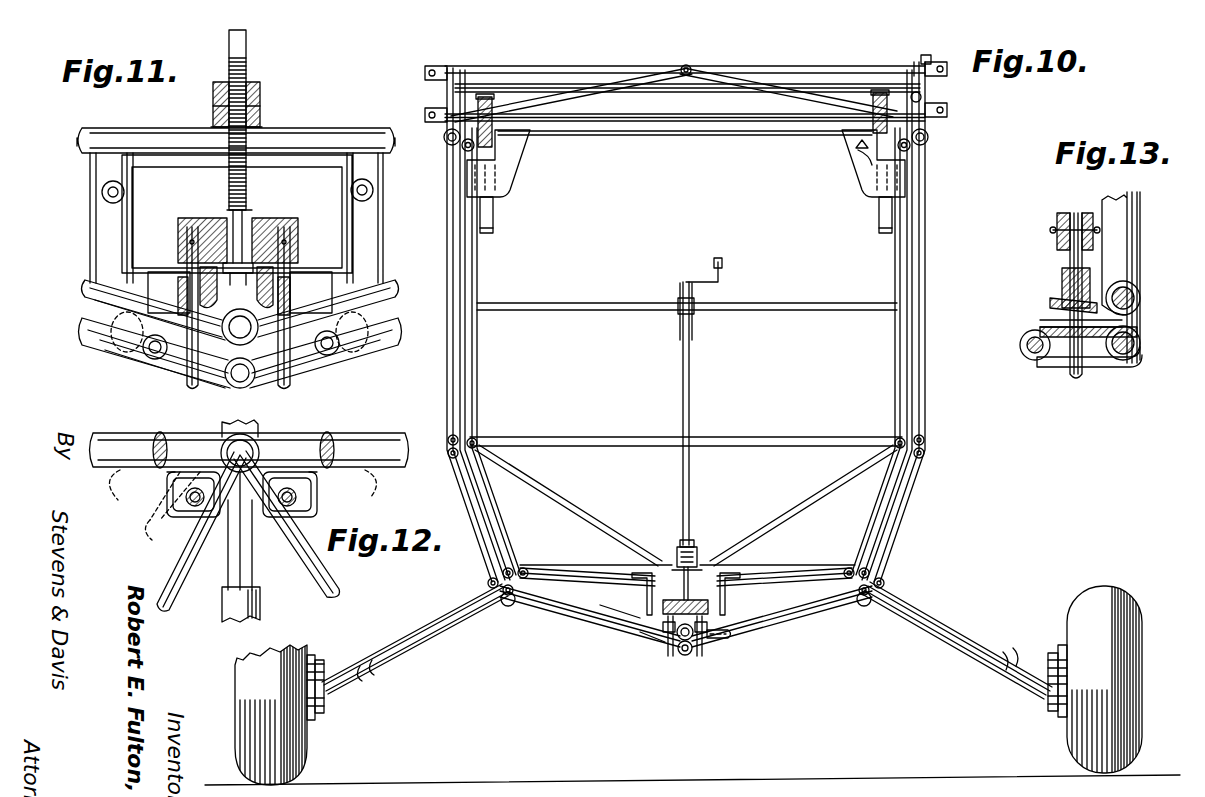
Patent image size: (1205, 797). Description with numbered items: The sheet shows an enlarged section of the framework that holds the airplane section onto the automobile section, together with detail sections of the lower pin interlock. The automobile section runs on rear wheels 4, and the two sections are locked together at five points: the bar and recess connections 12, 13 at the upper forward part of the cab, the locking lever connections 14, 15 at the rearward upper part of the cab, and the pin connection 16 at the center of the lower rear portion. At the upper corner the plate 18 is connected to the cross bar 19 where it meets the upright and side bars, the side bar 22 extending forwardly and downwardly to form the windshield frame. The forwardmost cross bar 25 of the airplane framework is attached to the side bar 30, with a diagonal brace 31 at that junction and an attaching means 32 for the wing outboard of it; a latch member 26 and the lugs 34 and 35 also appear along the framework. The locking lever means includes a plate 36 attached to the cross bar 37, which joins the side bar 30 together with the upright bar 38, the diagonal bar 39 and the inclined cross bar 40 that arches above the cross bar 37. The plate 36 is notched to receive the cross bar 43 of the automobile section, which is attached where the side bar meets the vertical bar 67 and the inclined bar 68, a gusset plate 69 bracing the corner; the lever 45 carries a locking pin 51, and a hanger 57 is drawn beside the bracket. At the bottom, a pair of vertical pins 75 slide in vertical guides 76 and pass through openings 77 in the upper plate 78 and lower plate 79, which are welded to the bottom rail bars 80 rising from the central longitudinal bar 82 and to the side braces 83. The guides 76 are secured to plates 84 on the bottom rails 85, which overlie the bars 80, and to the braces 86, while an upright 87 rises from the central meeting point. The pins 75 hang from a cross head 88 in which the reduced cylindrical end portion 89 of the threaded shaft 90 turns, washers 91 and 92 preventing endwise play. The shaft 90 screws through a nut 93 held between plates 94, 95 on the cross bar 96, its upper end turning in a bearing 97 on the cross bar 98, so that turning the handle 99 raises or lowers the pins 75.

In FIG. 10, the rear wheels 4 is at (303, 748).
In FIG. 10, the bar and recess connection 12 is at (473, 60).
In FIG. 11, the bar and recess connection 12 is at (63, 296).
In FIG. 10, the bar and recess connection 13 is at (900, 48).
In FIG. 11, the bar and recess connection 13 is at (186, 213).
In FIG. 10, the locking lever connection 14 is at (512, 152).
In FIG. 10, the locking lever connection 15 is at (858, 146).
In FIG. 12, the locking lever connection 15 is at (243, 489).
In FIG. 10, the pin connection 16 is at (690, 667).
In FIG. 10, the plate 18 is at (912, 62).
In FIG. 10, the cross bar 19 is at (840, 84).
In FIG. 13, the cross bar 19 is at (1045, 368).
In FIG. 10, the side bar 22 is at (947, 110).
In FIG. 10, the cross bar 25 is at (853, 66).
In FIG. 10, the latch 26 is at (485, 95).
In FIG. 10, the side bar 30 is at (921, 97).
In FIG. 10, the diagonal brace 31 is at (853, 90).
In FIG. 10, the attaching means 32 is at (931, 60).
In FIG. 10, the lug 34 is at (447, 80).
In FIG. 10, the post 35 is at (446, 240).
In FIG. 10, the plate 36 is at (832, 134).
In FIG. 10, the cross bar 37 is at (617, 122).
In FIG. 10, the upright bar 38 is at (447, 205).
In FIG. 10, the diagonal bar 39 is at (444, 138).
In FIG. 10, the inclined cross bar 40 is at (562, 98).
In FIG. 10, the cross bar 43 is at (576, 136).
In FIG. 10, the lever 45 is at (880, 92).
In FIG. 10, the locking pin 51 is at (866, 160).
In FIG. 10, the hanger bar 57 is at (493, 228).
In FIG. 10, the vertical bar 67 is at (477, 252).
In FIG. 10, the inclined bar 68 is at (462, 149).
In FIG. 10, the gusset plate 69 is at (498, 185).
In FIG. 10, the vertical pins 75 is at (668, 655).
In FIG. 11, the vertical pins 75 is at (186, 262).
In FIG. 13, the vertical pins 75 is at (1072, 378).
In FIG. 10, the vertical guides 76 is at (660, 624).
In FIG. 11, the vertical guides 76 is at (178, 282).
In FIG. 12, the vertical guides 76 is at (242, 480).
In FIG. 13, the vertical guides 76 is at (1062, 280).
In FIG. 11, the openings 77 is at (178, 372).
In FIG. 13, the openings 77 is at (1040, 323).
In FIG. 10, the upper plate 78 is at (640, 627).
In FIG. 11, the upper plate 78 is at (130, 345).
In FIG. 12, the upper plate 78 is at (132, 498).
In FIG. 13, the upper plate 78 is at (1040, 332).
In FIG. 10, the lower plate 79 is at (660, 650).
In FIG. 11, the lower plate 79 is at (160, 375).
In FIG. 10, the bottom rail bars 80 is at (580, 614).
In FIG. 11, the bottom rail bars 80 is at (92, 350).
In FIG. 12, the bottom rail bars 80 is at (100, 436).
In FIG. 13, the bottom rail bars 80 is at (1141, 340).
In FIG. 10, the longitudinal bar 82 is at (682, 656).
In FIG. 11, the longitudinal bar 82 is at (245, 390).
In FIG. 12, the longitudinal bar 82 is at (228, 605).
In FIG. 11, the side braces 83 is at (150, 360).
In FIG. 12, the side braces 83 is at (155, 535).
In FIG. 13, the side braces 83 is at (1022, 352).
In FIG. 11, the plates 84 is at (176, 308).
In FIG. 12, the plates 84 is at (172, 508).
In FIG. 13, the plates 84 is at (1050, 302).
In FIG. 10, the bottom rails 85 is at (602, 578).
In FIG. 11, the bottom rails 85 is at (86, 282).
In FIG. 12, the bottom rails 85 is at (163, 436).
In FIG. 13, the bottom rails 85 is at (1140, 298).
In FIG. 10, the braces 86 is at (725, 640).
In FIG. 11, the braces 86 is at (239, 285).
In FIG. 12, the braces 86 is at (170, 565).
In FIG. 10, the upright 87 is at (672, 592).
In FIG. 11, the upright 87 is at (225, 178).
In FIG. 12, the upright 87 is at (225, 436).
In FIG. 13, the upright 87 is at (1140, 268).
In FIG. 10, the cross head 88 is at (708, 600).
In FIG. 11, the cross head 88 is at (278, 220).
In FIG. 13, the cross head 88 is at (1057, 225).
In FIG. 11, the reduced cylindrical end portion 89 is at (228, 216).
In FIG. 10, the threaded shaft 90 is at (690, 488).
In FIG. 11, the threaded shaft 90 is at (247, 62).
In FIG. 11, the washer 91 is at (245, 218).
In FIG. 11, the washer 92 is at (238, 282).
In FIG. 10, the nut 93 is at (697, 552).
In FIG. 11, the nut 93 is at (262, 104).
In FIG. 10, the plate 94 is at (680, 544).
In FIG. 11, the plate 94 is at (262, 86).
In FIG. 10, the plate 95 is at (648, 565).
In FIG. 11, the plate 95 is at (262, 120).
In FIG. 10, the cross bar 96 is at (760, 566).
In FIG. 11, the cross bar 96 is at (172, 128).
In FIG. 10, the bearing 97 is at (677, 305).
In FIG. 10, the cross bar 98 is at (587, 303).
In FIG. 10, the handle 99 is at (722, 262).